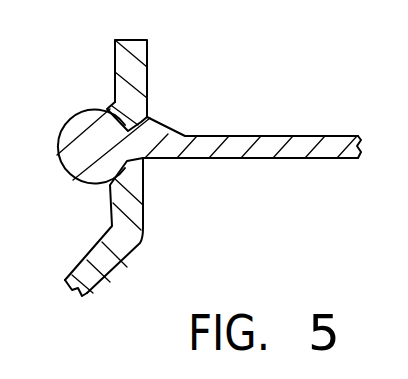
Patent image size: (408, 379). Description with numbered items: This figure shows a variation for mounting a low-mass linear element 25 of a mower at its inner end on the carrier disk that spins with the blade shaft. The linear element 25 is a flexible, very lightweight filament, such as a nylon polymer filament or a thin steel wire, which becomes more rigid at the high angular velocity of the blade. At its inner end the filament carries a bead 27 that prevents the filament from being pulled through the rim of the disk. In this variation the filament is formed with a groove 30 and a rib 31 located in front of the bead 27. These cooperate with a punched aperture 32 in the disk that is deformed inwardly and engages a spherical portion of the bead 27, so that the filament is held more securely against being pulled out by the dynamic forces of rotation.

The linear element 25 is at (247, 134).
The bead 27 is at (57, 166).
The groove 30 is at (147, 117).
The rib 31 is at (143, 165).
The punched aperture 32 is at (78, 113).